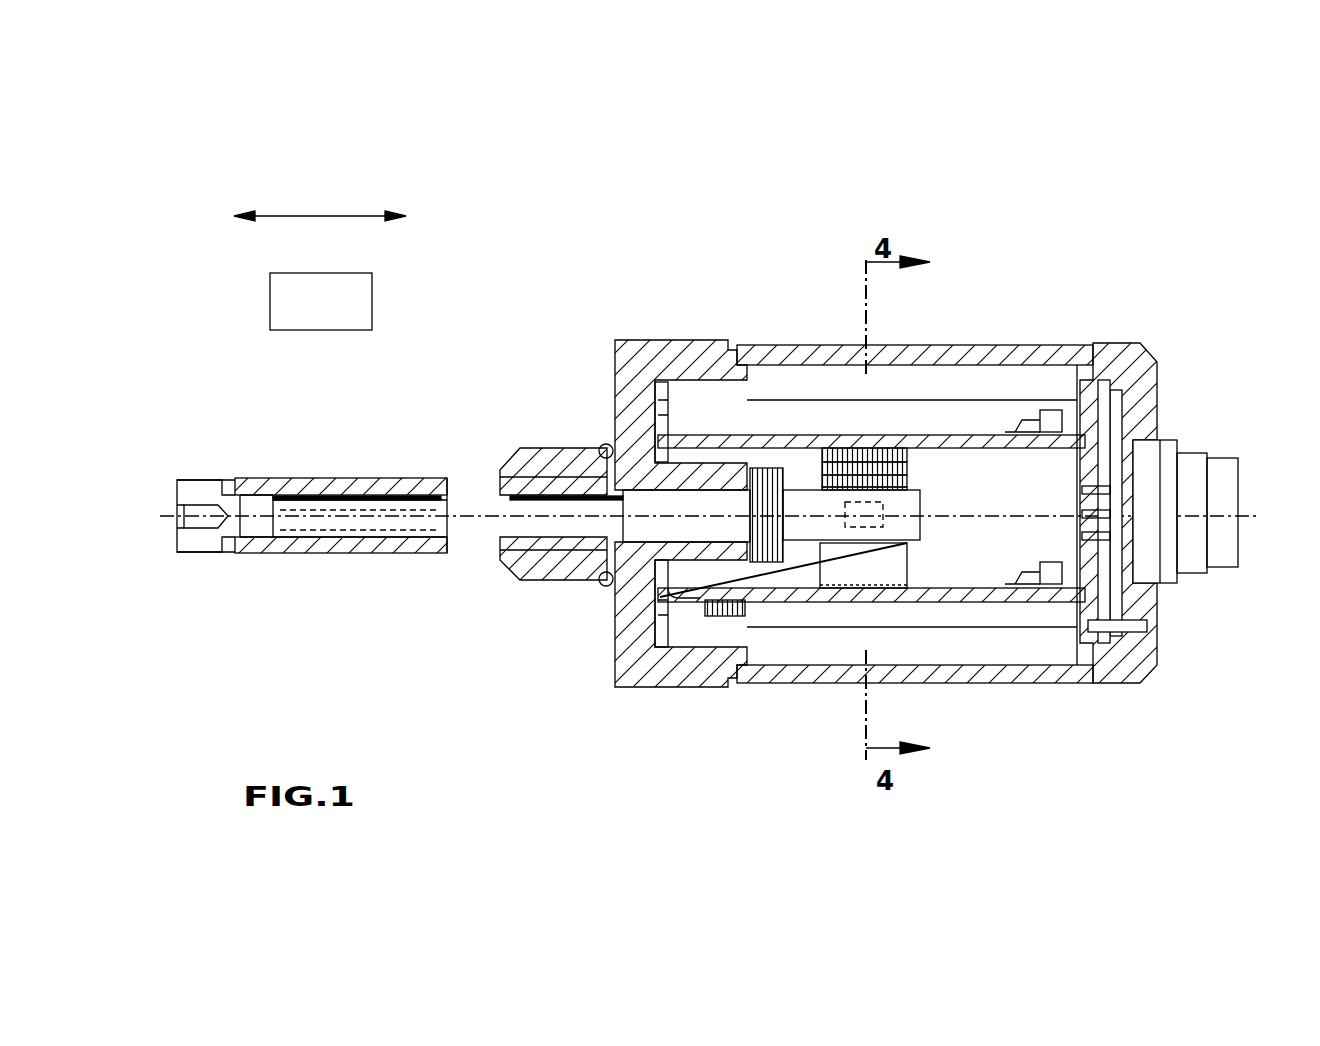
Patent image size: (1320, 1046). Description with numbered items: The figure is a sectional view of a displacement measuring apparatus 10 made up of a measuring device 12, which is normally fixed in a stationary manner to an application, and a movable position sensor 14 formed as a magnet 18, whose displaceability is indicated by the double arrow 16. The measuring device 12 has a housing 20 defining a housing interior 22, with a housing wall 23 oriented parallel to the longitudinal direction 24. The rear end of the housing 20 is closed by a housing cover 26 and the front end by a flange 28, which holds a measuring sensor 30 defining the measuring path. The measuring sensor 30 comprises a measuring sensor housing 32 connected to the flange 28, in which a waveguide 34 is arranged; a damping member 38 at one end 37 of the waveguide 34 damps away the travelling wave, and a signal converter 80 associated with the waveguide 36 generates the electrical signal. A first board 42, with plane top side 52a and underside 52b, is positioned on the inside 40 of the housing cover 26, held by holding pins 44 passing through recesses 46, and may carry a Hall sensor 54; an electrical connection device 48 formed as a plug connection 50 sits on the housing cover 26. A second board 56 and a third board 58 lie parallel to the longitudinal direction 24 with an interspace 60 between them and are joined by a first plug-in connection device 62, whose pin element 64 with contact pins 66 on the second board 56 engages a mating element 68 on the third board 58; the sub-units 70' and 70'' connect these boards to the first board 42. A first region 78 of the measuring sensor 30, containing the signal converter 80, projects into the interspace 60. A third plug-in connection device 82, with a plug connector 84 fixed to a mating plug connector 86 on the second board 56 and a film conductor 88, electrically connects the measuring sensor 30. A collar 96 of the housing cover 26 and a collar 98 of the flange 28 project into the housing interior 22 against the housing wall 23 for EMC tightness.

The displacement measuring apparatus 10 is at (1016, 213).
The measuring device 12 is at (802, 250).
The position sensor 14 is at (338, 313).
The double arrow 16 is at (320, 216).
The magnet 18 is at (287, 314).
The housing 20 is at (990, 683).
The housing interior 22 is at (1030, 650).
The housing wall 23 is at (1013, 345).
The longitudinal direction 24 is at (355, 520).
The housing cover 26 is at (1140, 385).
The flange 28 is at (660, 668).
The measuring sensor 30 is at (393, 483).
The measuring sensor housing 32 is at (252, 547).
The waveguide 34 is at (325, 497).
The waveguide 36 is at (540, 492).
The end of the waveguide 37 is at (262, 495).
The damping member 38 is at (262, 525).
The inside of the housing cover 40 is at (1122, 430).
The first board 42 is at (1105, 378).
The holding pins 44 is at (1108, 540).
The recesses 46 is at (1133, 495).
The electrical connection device 48 is at (1185, 548).
The plug connection 50 is at (1197, 500).
The top side 52a is at (1080, 345).
The underside 52b is at (1143, 345).
The sensor 54 is at (1150, 632).
The second board 56 is at (778, 602).
The third board 58 is at (797, 435).
The interspace 60 is at (1059, 511).
The first plug-in connection device 62 is at (887, 440).
The pin element 64 is at (903, 447).
The contact pins 66 is at (905, 485).
The mating element 68 is at (903, 578).
The sub-unit of the second plug-in connection device 70' is at (1070, 679).
The sub-unit of the second plug-in connection device 70'' is at (1133, 368).
The first region 78 is at (798, 503).
The signal converter 80 is at (835, 490).
The third plug-in connection device 82 is at (640, 640).
The plug connector 84 is at (660, 600).
The mating plug connector 86 is at (722, 615).
The film conductor 88 is at (650, 585).
The surrounding collar 96 is at (1055, 410).
The surrounding collar 98 is at (743, 473).